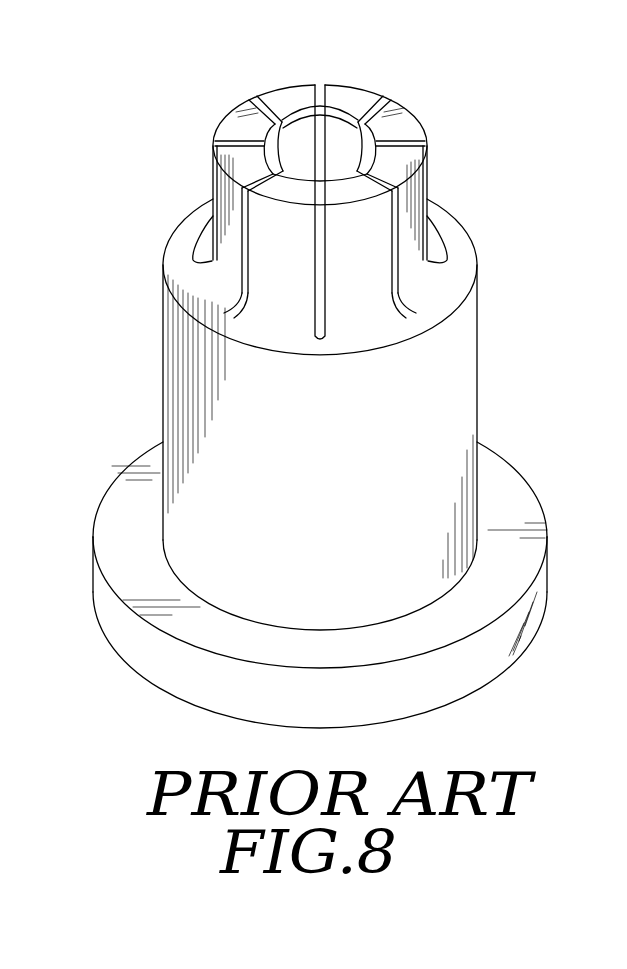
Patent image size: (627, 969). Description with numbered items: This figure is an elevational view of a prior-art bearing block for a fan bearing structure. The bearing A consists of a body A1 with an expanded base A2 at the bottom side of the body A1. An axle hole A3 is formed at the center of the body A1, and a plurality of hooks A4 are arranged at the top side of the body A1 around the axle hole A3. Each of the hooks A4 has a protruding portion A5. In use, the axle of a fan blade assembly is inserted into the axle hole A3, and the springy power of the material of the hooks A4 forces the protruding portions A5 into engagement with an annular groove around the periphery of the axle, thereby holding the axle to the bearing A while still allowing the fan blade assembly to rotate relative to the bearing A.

The bearing A is at (341, 381).
The body A1 is at (455, 392).
The expanded base A2 is at (515, 503).
The axle hole A3 is at (333, 137).
The hooks A4 is at (237, 127).
The protruding portion A5 is at (298, 137).